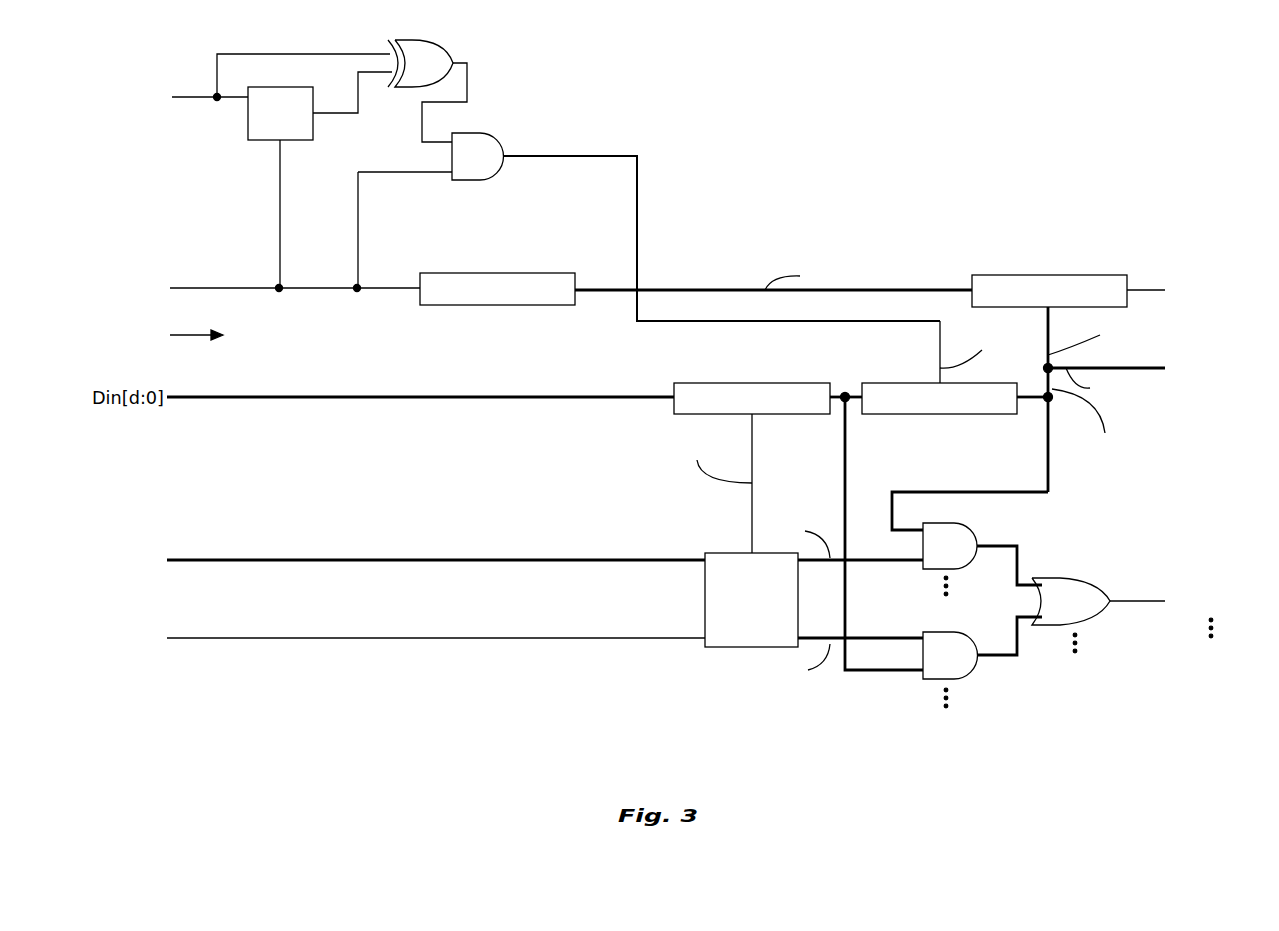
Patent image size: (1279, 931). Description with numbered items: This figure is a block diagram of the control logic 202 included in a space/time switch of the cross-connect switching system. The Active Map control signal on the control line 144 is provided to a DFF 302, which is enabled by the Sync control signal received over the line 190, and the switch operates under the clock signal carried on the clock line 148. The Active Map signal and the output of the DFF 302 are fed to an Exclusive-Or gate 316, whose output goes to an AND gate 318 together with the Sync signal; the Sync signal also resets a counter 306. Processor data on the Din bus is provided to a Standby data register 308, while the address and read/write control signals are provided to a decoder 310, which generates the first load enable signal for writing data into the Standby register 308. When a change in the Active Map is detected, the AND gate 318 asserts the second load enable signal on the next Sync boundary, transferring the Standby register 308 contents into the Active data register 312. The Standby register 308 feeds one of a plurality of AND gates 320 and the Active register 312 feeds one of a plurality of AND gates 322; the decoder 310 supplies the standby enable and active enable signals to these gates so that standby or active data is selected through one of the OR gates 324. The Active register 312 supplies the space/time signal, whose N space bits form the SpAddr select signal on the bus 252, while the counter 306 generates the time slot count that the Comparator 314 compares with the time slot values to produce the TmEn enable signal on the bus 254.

The control line 144 is at (195, 98).
The clock line 148 is at (192, 335).
The line 190 is at (227, 285).
The control logic 202 is at (1020, 152).
The bus 252 is at (1154, 380).
The bus 254 is at (1187, 294).
The DFF 302 is at (320, 180).
The counter 306 is at (696, 286).
The Standby data register 308 is at (757, 468).
The decoder 310 is at (498, 600).
The Active data register 312 is at (1010, 390).
The Comparator 314 is at (1077, 383).
The Exclusive-Or gate 316 is at (425, 40).
The AND gate 318 is at (476, 181).
The AND gates 320 is at (982, 662).
The AND gates 322 is at (970, 544).
The OR gates 324 is at (1145, 615).